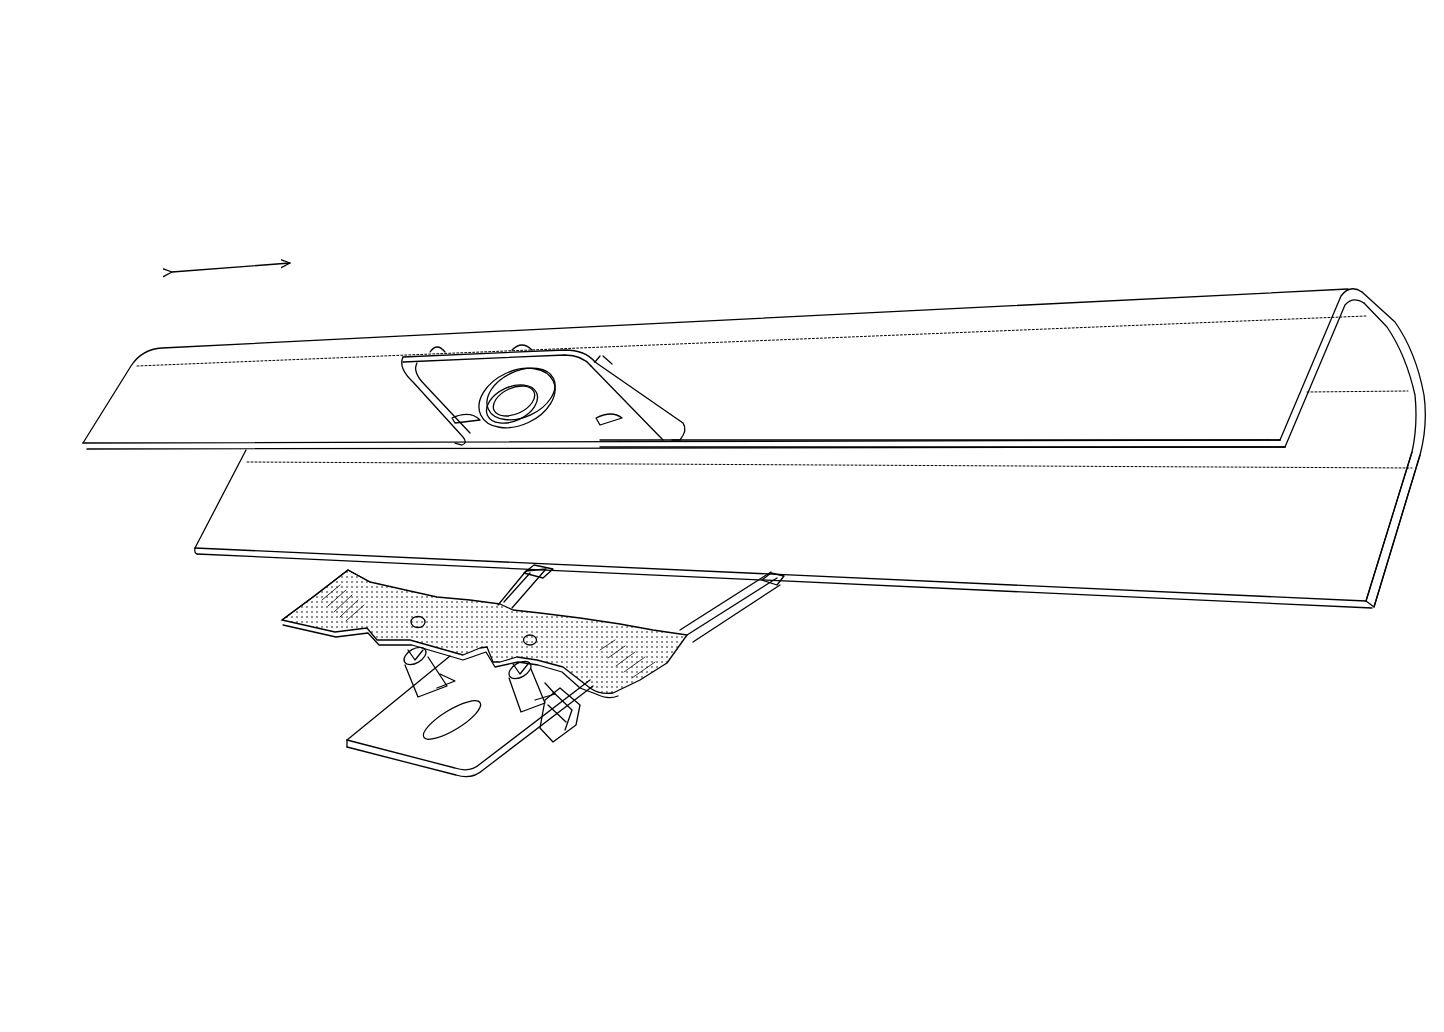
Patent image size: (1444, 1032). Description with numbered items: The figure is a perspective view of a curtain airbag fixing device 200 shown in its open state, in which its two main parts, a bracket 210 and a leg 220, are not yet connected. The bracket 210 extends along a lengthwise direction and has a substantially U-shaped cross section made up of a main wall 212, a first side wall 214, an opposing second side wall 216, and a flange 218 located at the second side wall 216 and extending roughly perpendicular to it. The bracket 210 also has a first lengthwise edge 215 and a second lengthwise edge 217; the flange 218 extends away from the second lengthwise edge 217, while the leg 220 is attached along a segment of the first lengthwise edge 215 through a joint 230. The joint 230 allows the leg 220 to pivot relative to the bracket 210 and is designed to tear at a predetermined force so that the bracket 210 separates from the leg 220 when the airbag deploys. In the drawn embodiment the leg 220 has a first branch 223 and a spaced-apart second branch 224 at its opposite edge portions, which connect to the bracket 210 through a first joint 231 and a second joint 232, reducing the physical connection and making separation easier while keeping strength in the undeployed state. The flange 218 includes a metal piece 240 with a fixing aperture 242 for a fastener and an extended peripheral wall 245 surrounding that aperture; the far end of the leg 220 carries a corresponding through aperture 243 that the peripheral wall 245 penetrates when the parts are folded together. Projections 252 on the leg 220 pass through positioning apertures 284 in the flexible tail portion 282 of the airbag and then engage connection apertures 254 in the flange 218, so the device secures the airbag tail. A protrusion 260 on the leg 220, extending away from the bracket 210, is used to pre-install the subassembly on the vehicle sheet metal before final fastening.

The curtain airbag fixing device 200 is at (1342, 168).
The bracket 210 is at (1082, 301).
The main wall 212 is at (1377, 353).
The first side wall 214 is at (1368, 550).
The first lengthwise edge 215 is at (1282, 603).
The second side wall 216 is at (1300, 348).
The second lengthwise edge 217 is at (1213, 447).
The flange 218 is at (617, 390).
The leg 220 is at (690, 638).
The first branch 223 is at (523, 583).
The second branch 224 is at (717, 608).
The joint 230 is at (778, 582).
The first joint 231 is at (537, 567).
The second joint 232 is at (770, 575).
The metal piece 240 is at (478, 385).
The fixing aperture 242 is at (513, 413).
The through aperture 243 is at (413, 733).
The extended peripheral wall 245 is at (497, 387).
The projection 252 is at (417, 677).
The connection aperture 254 is at (460, 420).
The protrusion 260 is at (573, 720).
The tail portion 282 is at (310, 600).
The positioning aperture 284 is at (410, 625).